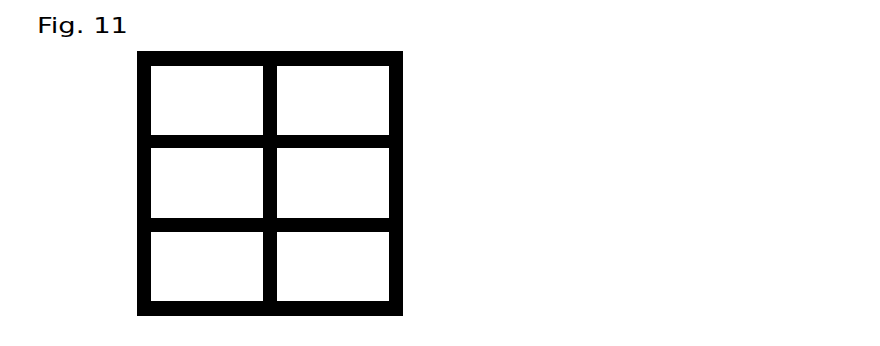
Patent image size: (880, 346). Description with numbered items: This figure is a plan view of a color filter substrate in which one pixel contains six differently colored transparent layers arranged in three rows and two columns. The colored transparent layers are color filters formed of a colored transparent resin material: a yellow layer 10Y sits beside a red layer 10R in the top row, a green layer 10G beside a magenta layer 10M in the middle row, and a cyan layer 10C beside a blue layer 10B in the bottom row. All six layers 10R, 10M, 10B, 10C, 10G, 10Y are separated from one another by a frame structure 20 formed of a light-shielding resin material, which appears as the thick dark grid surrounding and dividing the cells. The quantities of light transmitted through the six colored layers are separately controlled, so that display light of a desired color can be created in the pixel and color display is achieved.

The yellow layer 10Y is at (172, 101).
The red layer 10R is at (372, 100).
The green layer 10G is at (172, 182).
The magenta layer 10M is at (372, 185).
The cyan layer 10C is at (172, 267).
The blue layer 10B is at (372, 265).
The frame structure 20 is at (403, 140).